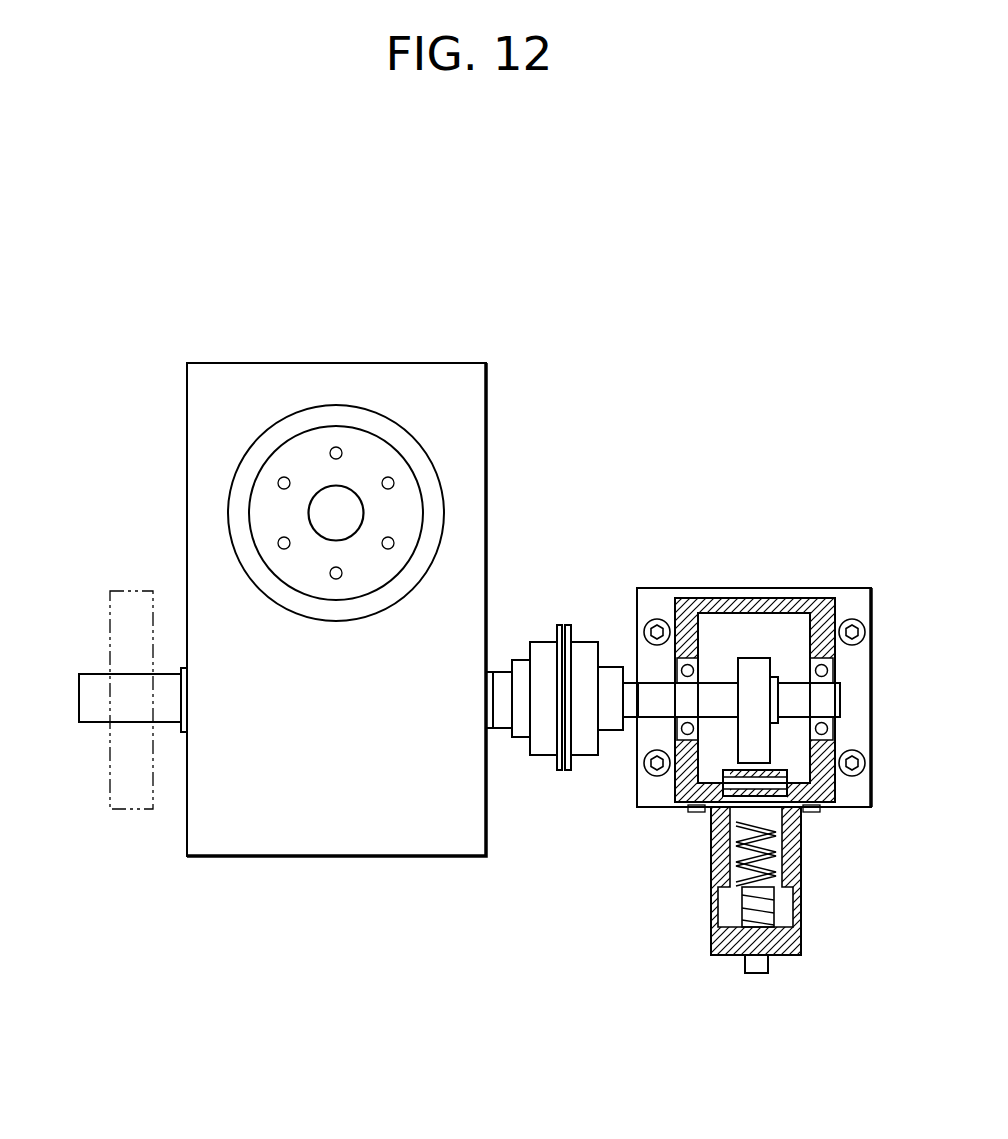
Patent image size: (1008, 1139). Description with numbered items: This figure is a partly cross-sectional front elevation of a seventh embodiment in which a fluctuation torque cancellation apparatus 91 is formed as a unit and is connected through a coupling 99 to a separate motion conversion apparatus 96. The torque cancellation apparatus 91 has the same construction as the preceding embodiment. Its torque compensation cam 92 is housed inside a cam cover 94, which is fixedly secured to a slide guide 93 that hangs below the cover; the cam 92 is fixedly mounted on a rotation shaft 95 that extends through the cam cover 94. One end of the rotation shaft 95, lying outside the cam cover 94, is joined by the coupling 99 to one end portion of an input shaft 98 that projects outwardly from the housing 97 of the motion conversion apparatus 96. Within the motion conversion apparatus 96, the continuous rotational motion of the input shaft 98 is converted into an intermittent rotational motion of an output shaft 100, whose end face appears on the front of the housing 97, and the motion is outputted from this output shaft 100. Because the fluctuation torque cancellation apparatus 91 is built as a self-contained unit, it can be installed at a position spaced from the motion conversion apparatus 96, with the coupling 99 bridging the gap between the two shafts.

The fluctuation torque cancellation apparatus 91 is at (751, 635).
The torque compensation cam 92 is at (758, 665).
The slide guide 93 is at (790, 873).
The cam cover 94 is at (683, 600).
The rotation shaft 95 is at (793, 703).
The motion conversion apparatus 96 is at (307, 550).
The housing 97 is at (300, 840).
The input shaft 98 is at (502, 713).
The coupling 99 is at (585, 743).
The output shaft 100 is at (348, 500).